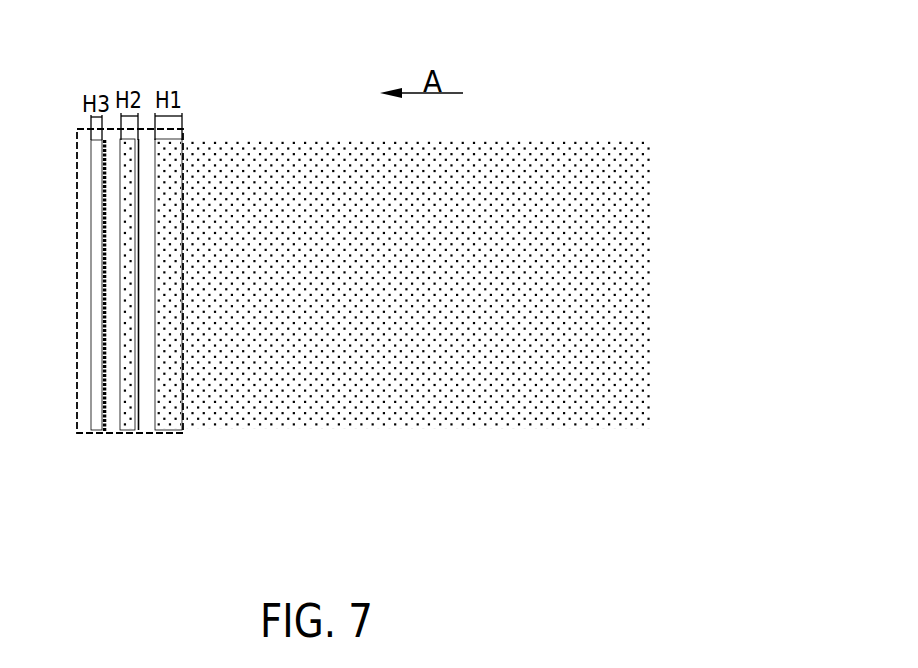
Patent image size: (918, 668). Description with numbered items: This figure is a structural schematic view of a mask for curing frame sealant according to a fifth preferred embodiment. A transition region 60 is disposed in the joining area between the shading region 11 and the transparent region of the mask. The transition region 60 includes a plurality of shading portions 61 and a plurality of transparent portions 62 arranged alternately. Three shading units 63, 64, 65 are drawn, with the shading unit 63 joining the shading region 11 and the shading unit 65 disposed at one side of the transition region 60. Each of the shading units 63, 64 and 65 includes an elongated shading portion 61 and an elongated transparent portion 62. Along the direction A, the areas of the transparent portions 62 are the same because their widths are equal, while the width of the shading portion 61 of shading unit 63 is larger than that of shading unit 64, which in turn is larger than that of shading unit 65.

The shading region 11 is at (512, 153).
The transition region 60 is at (71, 107).
The shading portion 61 is at (114, 233).
The transparent portion 62 is at (130, 177).
The shading unit 63 is at (163, 453).
The shading unit 64 is at (121, 453).
The shading unit 65 is at (82, 450).